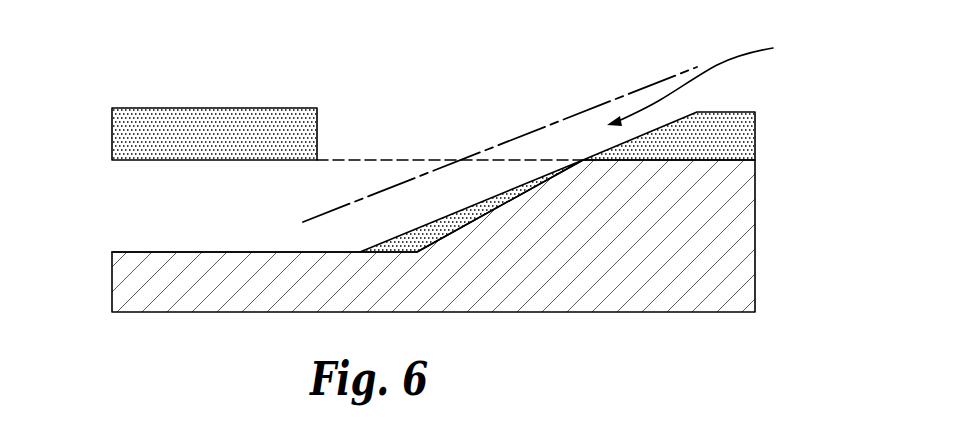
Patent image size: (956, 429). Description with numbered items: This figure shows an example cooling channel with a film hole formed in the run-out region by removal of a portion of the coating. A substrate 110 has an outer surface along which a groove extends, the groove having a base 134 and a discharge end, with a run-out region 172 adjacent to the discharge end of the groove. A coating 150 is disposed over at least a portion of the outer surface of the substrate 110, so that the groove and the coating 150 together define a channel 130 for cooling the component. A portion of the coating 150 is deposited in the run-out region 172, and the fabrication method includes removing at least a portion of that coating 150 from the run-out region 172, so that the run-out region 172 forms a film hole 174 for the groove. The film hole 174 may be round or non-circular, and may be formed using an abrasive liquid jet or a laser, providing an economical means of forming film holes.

The substrate 110 is at (590, 283).
The channel 130 is at (182, 197).
The base 134 is at (137, 252).
The coating 150 is at (123, 130).
The run-out region 172 is at (383, 168).
The film hole 174 is at (715, 79).